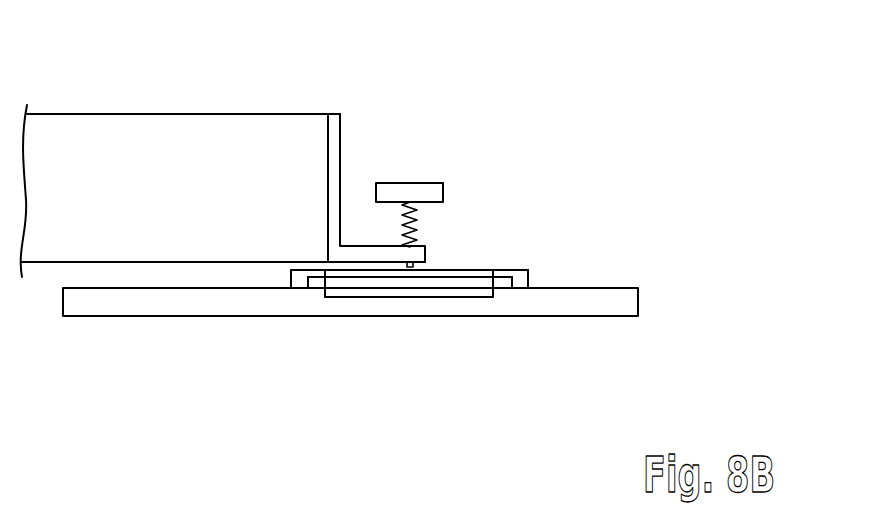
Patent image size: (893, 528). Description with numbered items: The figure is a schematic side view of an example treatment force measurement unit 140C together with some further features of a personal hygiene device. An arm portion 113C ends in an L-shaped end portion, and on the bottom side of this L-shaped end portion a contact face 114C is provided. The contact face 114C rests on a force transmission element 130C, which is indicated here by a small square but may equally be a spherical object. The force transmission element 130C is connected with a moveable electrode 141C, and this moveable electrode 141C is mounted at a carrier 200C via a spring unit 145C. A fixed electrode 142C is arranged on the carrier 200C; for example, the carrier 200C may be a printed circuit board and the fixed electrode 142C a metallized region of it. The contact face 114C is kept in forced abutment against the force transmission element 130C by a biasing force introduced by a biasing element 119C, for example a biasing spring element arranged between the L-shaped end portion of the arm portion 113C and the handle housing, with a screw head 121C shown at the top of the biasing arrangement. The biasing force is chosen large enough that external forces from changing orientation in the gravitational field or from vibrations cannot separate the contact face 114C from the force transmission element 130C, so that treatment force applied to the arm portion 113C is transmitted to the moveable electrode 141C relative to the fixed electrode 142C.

The arm portion 113C is at (363, 130).
The screw head 121C is at (406, 183).
The treatment force measurement unit 140C is at (497, 157).
The biasing element 119C is at (418, 220).
The force transmission element 130C is at (410, 266).
The carrier 200C is at (628, 305).
The spring unit 145C is at (297, 280).
The contact face 114C is at (365, 270).
The moveable electrode 141C is at (400, 272).
The fixed electrode 142C is at (458, 294).